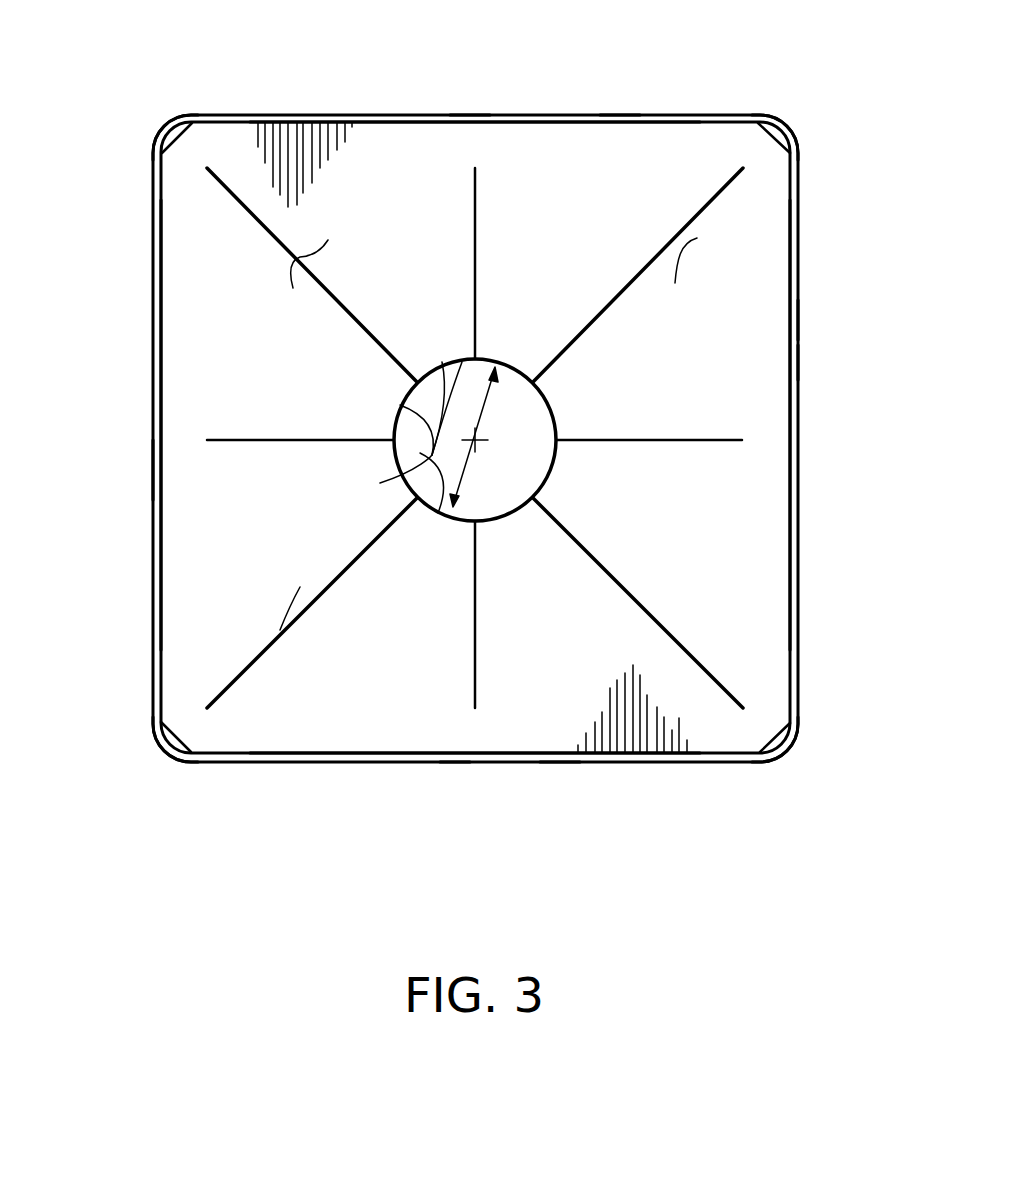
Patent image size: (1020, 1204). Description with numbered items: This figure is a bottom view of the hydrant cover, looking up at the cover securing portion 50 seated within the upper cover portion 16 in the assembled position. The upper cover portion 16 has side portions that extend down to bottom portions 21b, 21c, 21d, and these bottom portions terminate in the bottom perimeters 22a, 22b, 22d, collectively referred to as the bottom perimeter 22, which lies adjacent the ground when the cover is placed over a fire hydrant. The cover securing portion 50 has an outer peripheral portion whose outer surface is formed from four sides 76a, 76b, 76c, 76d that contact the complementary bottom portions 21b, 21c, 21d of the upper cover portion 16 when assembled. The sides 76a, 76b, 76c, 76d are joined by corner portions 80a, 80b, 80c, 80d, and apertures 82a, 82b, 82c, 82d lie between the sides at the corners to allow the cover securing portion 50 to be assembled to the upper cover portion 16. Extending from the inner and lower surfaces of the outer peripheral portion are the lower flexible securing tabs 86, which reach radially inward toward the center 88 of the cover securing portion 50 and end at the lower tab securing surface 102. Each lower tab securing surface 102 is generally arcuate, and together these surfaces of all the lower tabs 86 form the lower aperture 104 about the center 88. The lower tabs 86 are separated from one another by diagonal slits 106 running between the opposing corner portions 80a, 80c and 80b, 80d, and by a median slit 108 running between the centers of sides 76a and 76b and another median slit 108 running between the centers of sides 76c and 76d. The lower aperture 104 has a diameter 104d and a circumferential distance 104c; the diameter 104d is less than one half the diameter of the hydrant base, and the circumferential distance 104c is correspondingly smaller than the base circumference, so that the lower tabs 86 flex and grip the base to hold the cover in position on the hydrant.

The upper cover portion 16 is at (796, 634).
The bottom portion 21b is at (795, 326).
The bottom portion 21c is at (615, 113).
The bottom portion 21d is at (560, 766).
The bottom perimeter 22 is at (665, 577).
The bottom perimeter 22a is at (472, 117).
The bottom perimeter 22b is at (795, 365).
The bottom perimeter 22d is at (455, 763).
The cover securing portion 50 is at (758, 530).
The side 76a is at (158, 357).
The side 76b is at (796, 442).
The side 76c is at (372, 117).
The side 76d is at (353, 757).
The corner portion 80a is at (172, 117).
The corner portion 80b is at (780, 132).
The corner portion 80c is at (793, 739).
The corner portion 80d is at (170, 755).
The aperture 82a is at (178, 118).
The aperture 82b is at (775, 130).
The aperture 82c is at (774, 753).
The aperture 82d is at (153, 733).
The lower flexible securing tab 86 is at (283, 250).
The center 88 is at (468, 518).
The lower tab securing surface 102 is at (380, 483).
The lower aperture 104 is at (543, 487).
The circumferential distance 104c is at (552, 405).
The diameter 104d is at (485, 420).
The diagonal slit 106 is at (227, 187).
The median slit 108 is at (480, 188).